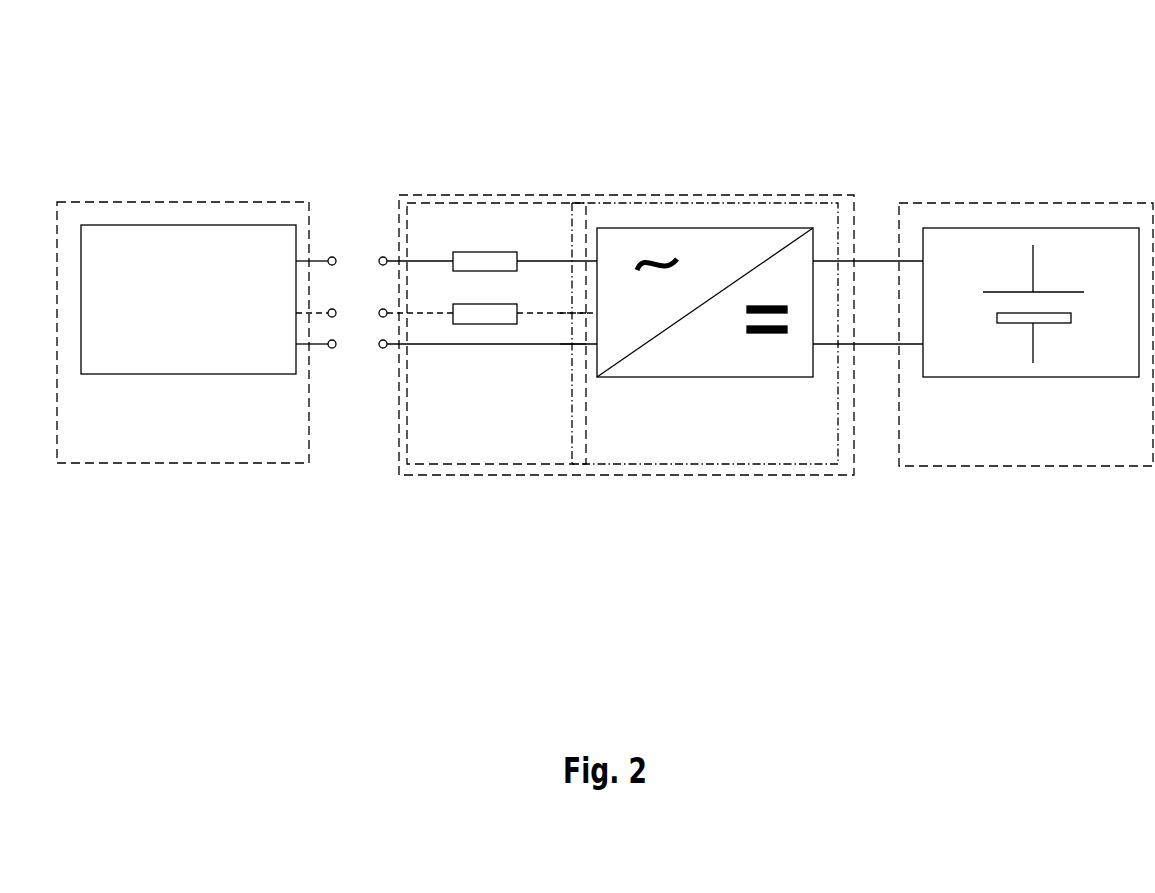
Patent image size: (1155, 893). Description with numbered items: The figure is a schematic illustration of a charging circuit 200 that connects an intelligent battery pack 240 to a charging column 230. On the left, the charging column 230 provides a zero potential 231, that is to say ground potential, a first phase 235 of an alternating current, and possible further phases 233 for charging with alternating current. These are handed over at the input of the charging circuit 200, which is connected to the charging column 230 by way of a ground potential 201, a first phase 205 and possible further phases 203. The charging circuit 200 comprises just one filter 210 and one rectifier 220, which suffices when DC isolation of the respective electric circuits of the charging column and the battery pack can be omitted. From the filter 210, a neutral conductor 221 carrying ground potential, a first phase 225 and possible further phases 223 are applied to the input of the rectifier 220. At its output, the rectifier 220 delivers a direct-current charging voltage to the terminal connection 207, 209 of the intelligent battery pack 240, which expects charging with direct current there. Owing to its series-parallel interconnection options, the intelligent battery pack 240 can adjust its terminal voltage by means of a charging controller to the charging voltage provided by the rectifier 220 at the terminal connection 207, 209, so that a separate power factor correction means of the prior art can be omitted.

The charging circuit 200 is at (685, 195).
The ground potential 201 is at (380, 356).
The further phases 203 is at (389, 303).
The first phase 205 is at (385, 250).
The terminal connection 207 is at (871, 350).
The terminal connection 209 is at (868, 255).
The filter 210 is at (488, 418).
The rectifier 220 is at (748, 418).
The neutral conductor 221 is at (572, 340).
The further phases 223 is at (578, 310).
The first phase 225 is at (580, 253).
The charging column 230 is at (155, 417).
The zero potential 231 is at (329, 352).
The further phases 233 is at (324, 302).
The first phase 235 is at (329, 250).
The intelligent battery pack 240 is at (1028, 435).